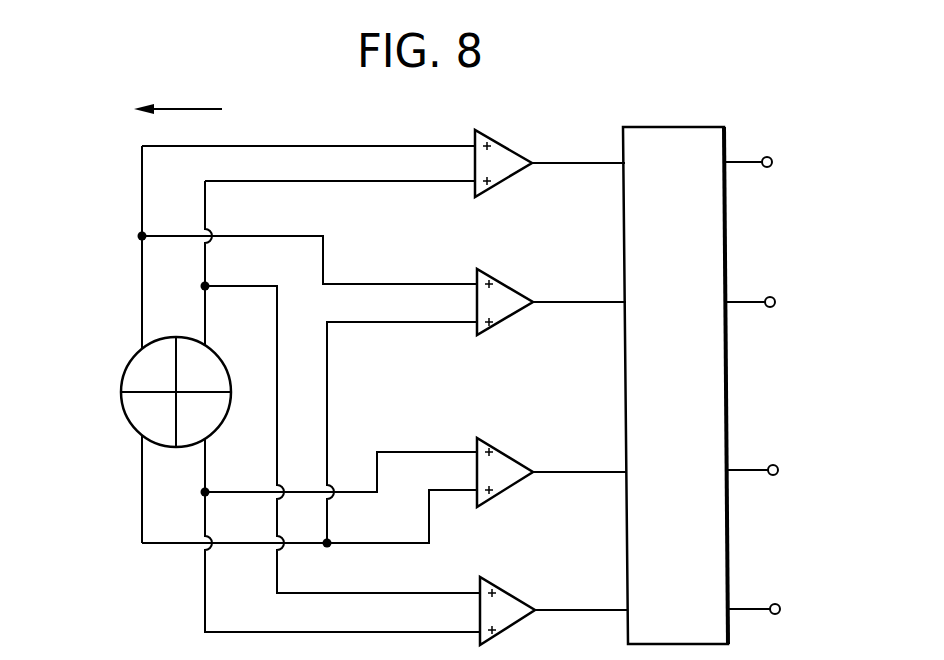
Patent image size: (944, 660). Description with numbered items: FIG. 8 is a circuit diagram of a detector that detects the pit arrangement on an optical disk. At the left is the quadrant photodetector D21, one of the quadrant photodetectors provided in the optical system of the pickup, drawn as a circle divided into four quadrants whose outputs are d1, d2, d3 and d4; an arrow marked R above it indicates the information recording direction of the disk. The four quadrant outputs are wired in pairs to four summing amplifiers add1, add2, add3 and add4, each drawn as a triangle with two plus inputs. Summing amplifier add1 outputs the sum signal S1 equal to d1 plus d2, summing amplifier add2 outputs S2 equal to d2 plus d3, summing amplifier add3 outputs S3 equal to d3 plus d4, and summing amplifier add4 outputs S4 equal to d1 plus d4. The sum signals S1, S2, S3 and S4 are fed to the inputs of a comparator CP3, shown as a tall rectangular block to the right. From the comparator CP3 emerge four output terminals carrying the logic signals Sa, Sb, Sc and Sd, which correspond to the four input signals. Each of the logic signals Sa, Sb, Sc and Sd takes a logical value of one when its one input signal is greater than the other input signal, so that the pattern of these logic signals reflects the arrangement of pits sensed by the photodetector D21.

The quadrant photodetector D21 is at (122, 372).
The photodetector quadrant output d1 is at (203, 364).
The photodetector quadrant output d2 is at (148, 364).
The photodetector quadrant output d3 is at (148, 419).
The photodetector quadrant output d4 is at (203, 419).
The summing amplifier add1 is at (512, 157).
The summing amplifier add2 is at (515, 298).
The summing amplifier add3 is at (512, 467).
The summing amplifier add4 is at (517, 607).
The comparator CP3 is at (688, 137).
The sum signal S1 is at (649, 165).
The sum signal S2 is at (652, 307).
The sum signal S3 is at (653, 477).
The sum signal S4 is at (656, 612).
The logic signal Sa is at (765, 163).
The logic signal Sb is at (771, 307).
The logic signal Sc is at (771, 477).
The logic signal Sd is at (773, 612).
The information recording direction R is at (178, 98).